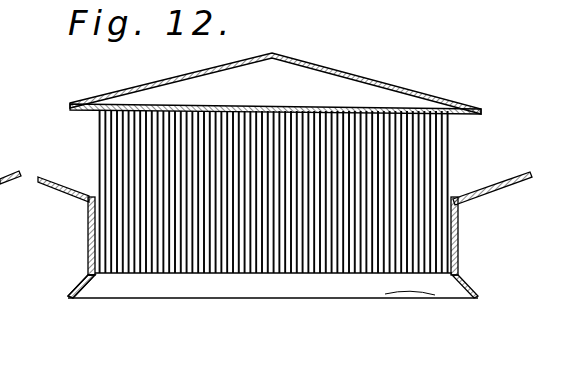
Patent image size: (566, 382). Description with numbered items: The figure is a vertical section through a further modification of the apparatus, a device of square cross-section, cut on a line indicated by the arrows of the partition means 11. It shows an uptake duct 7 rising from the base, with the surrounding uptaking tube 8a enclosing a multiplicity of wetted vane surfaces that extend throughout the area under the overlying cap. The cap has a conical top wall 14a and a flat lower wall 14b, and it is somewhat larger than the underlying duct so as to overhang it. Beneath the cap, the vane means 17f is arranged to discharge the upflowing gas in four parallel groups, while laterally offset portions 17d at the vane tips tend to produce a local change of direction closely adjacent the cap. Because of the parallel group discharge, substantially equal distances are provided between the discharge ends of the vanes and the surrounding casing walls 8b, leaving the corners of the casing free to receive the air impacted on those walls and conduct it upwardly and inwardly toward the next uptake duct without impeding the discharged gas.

The conical top wall 14a is at (393, 55).
The flat lower wall 14b is at (401, 107).
The vane means 17f is at (410, 167).
The laterally offset portions 17d is at (14, 147).
The partition means 11 is at (486, 202).
The casing walls 8b is at (459, 248).
The uptaking tube 8a is at (47, 277).
The uptake duct 7 is at (0, 245).